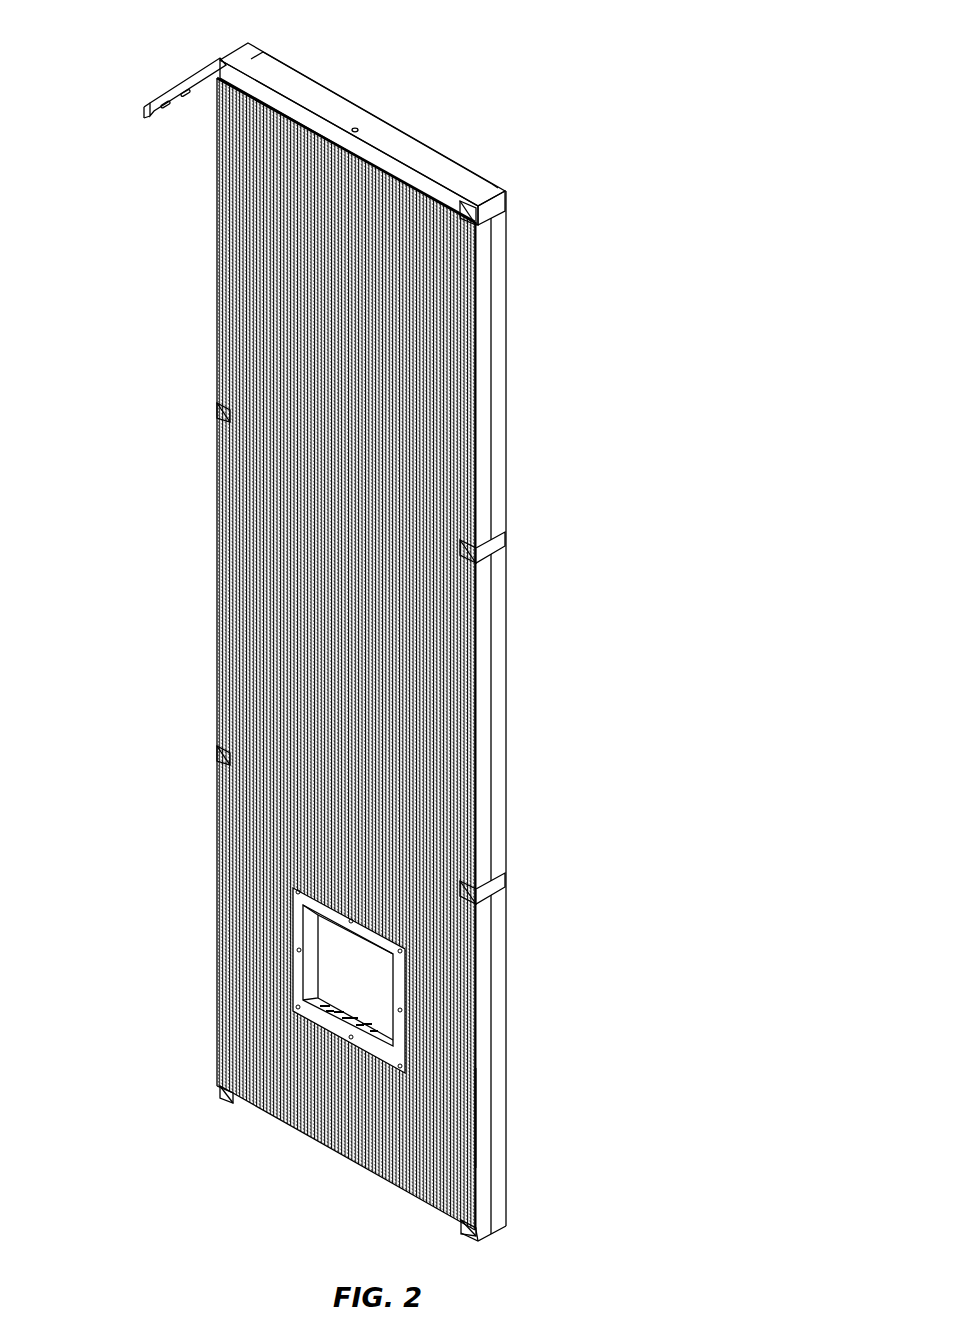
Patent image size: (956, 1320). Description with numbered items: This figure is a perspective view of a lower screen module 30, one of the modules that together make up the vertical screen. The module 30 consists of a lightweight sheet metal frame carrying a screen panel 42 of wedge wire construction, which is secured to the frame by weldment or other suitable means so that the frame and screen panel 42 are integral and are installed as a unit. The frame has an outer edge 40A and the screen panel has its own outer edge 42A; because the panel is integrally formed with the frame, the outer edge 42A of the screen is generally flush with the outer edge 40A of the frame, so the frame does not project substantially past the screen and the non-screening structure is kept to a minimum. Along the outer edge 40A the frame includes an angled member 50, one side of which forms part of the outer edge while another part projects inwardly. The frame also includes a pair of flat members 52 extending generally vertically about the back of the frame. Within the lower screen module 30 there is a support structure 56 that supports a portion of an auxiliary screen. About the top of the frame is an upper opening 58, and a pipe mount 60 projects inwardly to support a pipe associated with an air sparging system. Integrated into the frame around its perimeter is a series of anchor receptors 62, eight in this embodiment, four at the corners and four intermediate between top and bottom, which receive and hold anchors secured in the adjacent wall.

The lower screen module 30 is at (553, 57).
The screen panel 42 is at (398, 354).
The outer edge of the screen panel 42A is at (470, 1102).
The outer edge of the frame 40A is at (510, 938).
The angled member 50 is at (535, 716).
The flat member 52 is at (500, 730).
The support structure 56 is at (332, 1007).
The upper opening 58 is at (310, 82).
The pipe mount 60 is at (150, 92).
The anchor receptor 62 is at (487, 542).